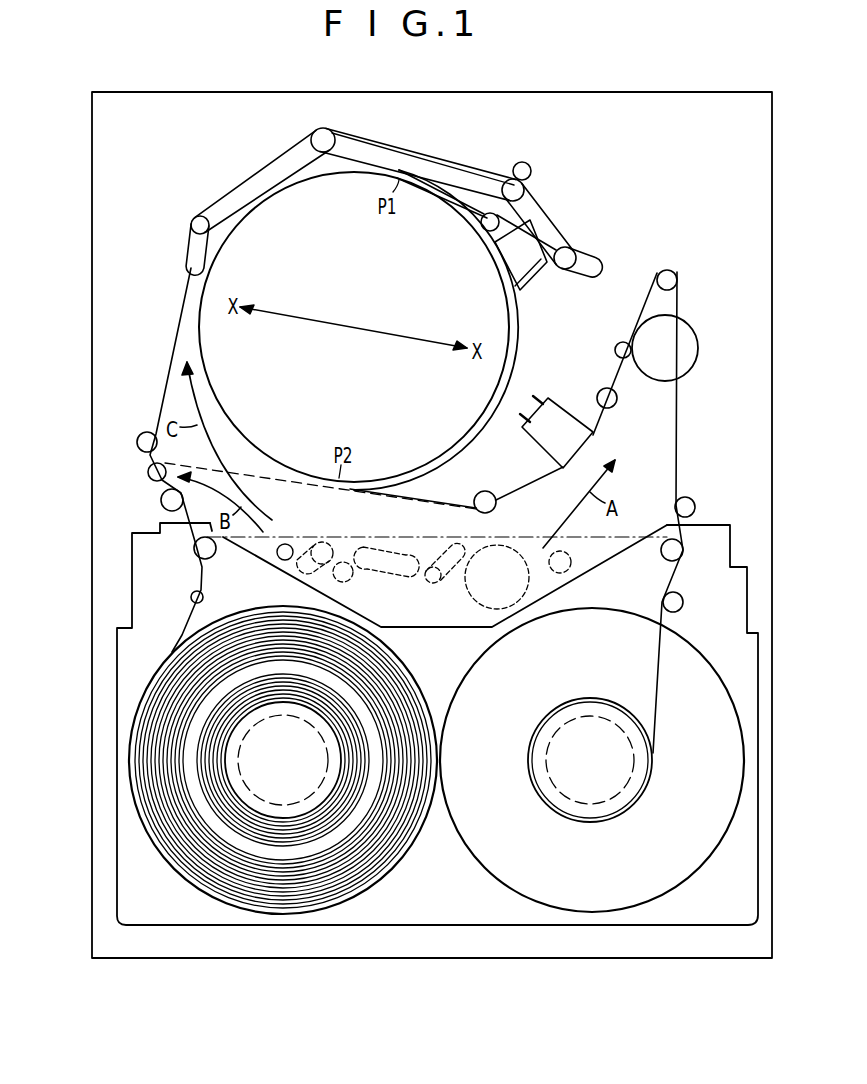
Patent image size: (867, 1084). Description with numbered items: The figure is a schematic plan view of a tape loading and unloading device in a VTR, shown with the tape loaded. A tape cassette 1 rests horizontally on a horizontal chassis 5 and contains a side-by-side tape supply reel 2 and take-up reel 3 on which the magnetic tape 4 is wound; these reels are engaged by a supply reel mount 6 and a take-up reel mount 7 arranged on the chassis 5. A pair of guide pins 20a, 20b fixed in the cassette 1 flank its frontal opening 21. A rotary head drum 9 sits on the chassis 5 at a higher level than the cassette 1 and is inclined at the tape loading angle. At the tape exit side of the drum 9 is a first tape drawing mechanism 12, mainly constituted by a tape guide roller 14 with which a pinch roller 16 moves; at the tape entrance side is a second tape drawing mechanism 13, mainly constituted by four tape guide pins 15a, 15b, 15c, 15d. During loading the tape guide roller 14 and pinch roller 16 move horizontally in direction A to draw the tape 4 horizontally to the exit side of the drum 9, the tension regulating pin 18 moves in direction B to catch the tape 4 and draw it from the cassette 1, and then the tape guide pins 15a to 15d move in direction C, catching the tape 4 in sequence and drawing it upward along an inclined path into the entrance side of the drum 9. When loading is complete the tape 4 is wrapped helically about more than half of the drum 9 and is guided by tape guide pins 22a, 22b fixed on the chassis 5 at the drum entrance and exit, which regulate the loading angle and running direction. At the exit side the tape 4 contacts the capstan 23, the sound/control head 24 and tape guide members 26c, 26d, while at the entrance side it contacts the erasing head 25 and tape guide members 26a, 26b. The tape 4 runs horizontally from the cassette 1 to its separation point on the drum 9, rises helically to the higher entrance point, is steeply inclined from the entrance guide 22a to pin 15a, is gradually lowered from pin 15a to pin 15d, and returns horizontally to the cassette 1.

The tape cassette 1 is at (397, 920).
The tape supply reel 2 is at (172, 862).
The take-up reel 3 is at (627, 902).
The magnetic tape 4 is at (686, 430).
The horizontal chassis 5 is at (100, 438).
The supply reel mount 6 is at (250, 772).
The take-up reel mount 7 is at (588, 796).
The rotary head drum 9 is at (498, 320).
The first tape drawing mechanism 12 is at (688, 292).
The second tape drawing mechanism 13 is at (560, 200).
The tape guide roller 14 is at (665, 270).
The tape guide pin 15a is at (570, 247).
The tape guide pin 15b is at (523, 162).
The tape guide pin 15c is at (334, 133).
The tape guide pin 15d is at (190, 250).
The pinch roller 16 is at (690, 345).
The tension regulating pin 18 is at (150, 466).
The guide pin 20a is at (194, 550).
The guide pin 20b is at (683, 557).
The frontal opening 21 is at (572, 578).
The tape guide pin 22a is at (483, 229).
The tape guide pin 22b is at (485, 490).
The capstan 23 is at (616, 346).
The sound/control head 24 is at (551, 400).
The erasing head 25 is at (503, 262).
The tape guide member 26a is at (161, 497).
The tape guide member 26b is at (142, 433).
The tape guide member 26c is at (600, 390).
The tape guide member 26d is at (696, 507).